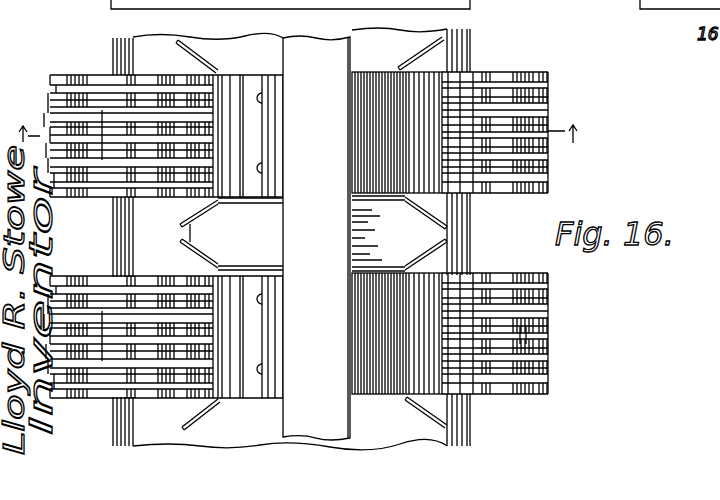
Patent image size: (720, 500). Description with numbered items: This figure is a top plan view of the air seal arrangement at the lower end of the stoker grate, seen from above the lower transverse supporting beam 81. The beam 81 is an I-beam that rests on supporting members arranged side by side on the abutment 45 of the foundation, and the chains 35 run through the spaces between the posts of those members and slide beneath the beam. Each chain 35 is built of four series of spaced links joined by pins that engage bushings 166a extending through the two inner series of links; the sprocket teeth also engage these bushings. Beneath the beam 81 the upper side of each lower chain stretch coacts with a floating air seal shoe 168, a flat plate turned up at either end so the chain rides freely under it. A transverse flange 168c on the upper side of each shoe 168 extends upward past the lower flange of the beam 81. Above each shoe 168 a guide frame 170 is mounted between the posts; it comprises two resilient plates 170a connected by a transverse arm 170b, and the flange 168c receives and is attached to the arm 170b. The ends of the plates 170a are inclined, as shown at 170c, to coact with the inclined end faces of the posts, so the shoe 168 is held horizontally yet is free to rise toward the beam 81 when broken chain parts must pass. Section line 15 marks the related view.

The lower transverse supporting beam 81 is at (316, 238).
The floating air seal shoe 168 is at (393, 283).
The transverse flange 168c is at (272, 158).
The guide frame 170 is at (470, 38).
The resilient plate 170a is at (251, 44).
The transverse arm 170b is at (265, 130).
The inclined plate end 170c is at (447, 232).
The chain 35 is at (545, 112).
The section line 15 is at (306, 134).
The abutment 45 is at (478, 421).
The bushing 166a is at (520, 333).